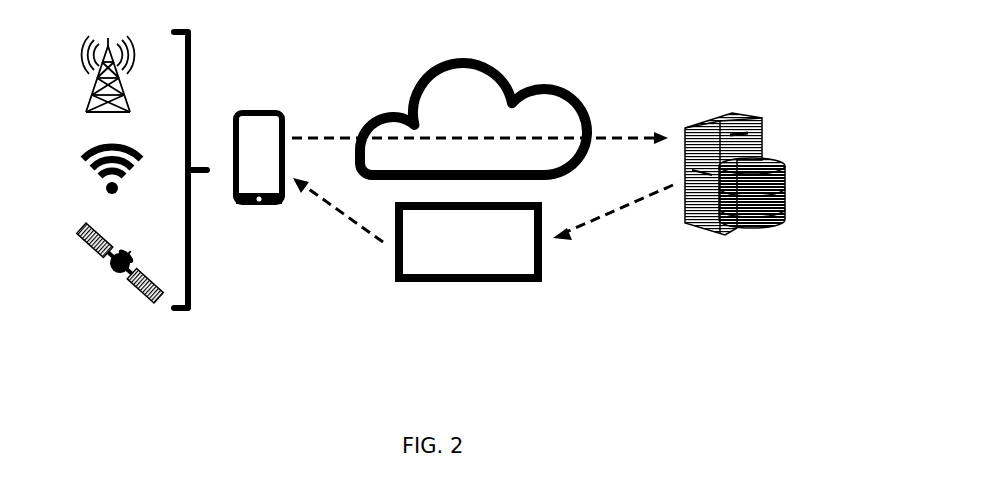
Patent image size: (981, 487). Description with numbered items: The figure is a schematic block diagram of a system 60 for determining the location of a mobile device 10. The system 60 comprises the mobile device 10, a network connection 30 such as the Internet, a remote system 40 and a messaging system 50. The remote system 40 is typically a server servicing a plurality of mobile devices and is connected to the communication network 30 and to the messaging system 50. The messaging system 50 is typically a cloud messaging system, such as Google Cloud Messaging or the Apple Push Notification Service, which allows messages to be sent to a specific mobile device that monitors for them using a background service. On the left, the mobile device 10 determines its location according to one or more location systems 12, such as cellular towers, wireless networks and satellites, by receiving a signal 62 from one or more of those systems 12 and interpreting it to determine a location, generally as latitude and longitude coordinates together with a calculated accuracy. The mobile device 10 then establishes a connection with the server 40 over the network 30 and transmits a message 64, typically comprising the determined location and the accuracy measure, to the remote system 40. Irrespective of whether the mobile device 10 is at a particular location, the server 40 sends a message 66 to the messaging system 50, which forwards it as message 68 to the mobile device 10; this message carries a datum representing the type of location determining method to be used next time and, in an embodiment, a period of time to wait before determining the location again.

The mobile device 10 is at (259, 206).
The location systems 12 is at (143, 334).
The network connection 30 is at (528, 82).
The remote system 40 is at (710, 236).
The messaging system 50 is at (462, 282).
The system 60 is at (549, 351).
The signal 62 is at (190, 90).
The message 64 is at (343, 137).
The message 66 is at (627, 208).
The message 68 is at (343, 213).